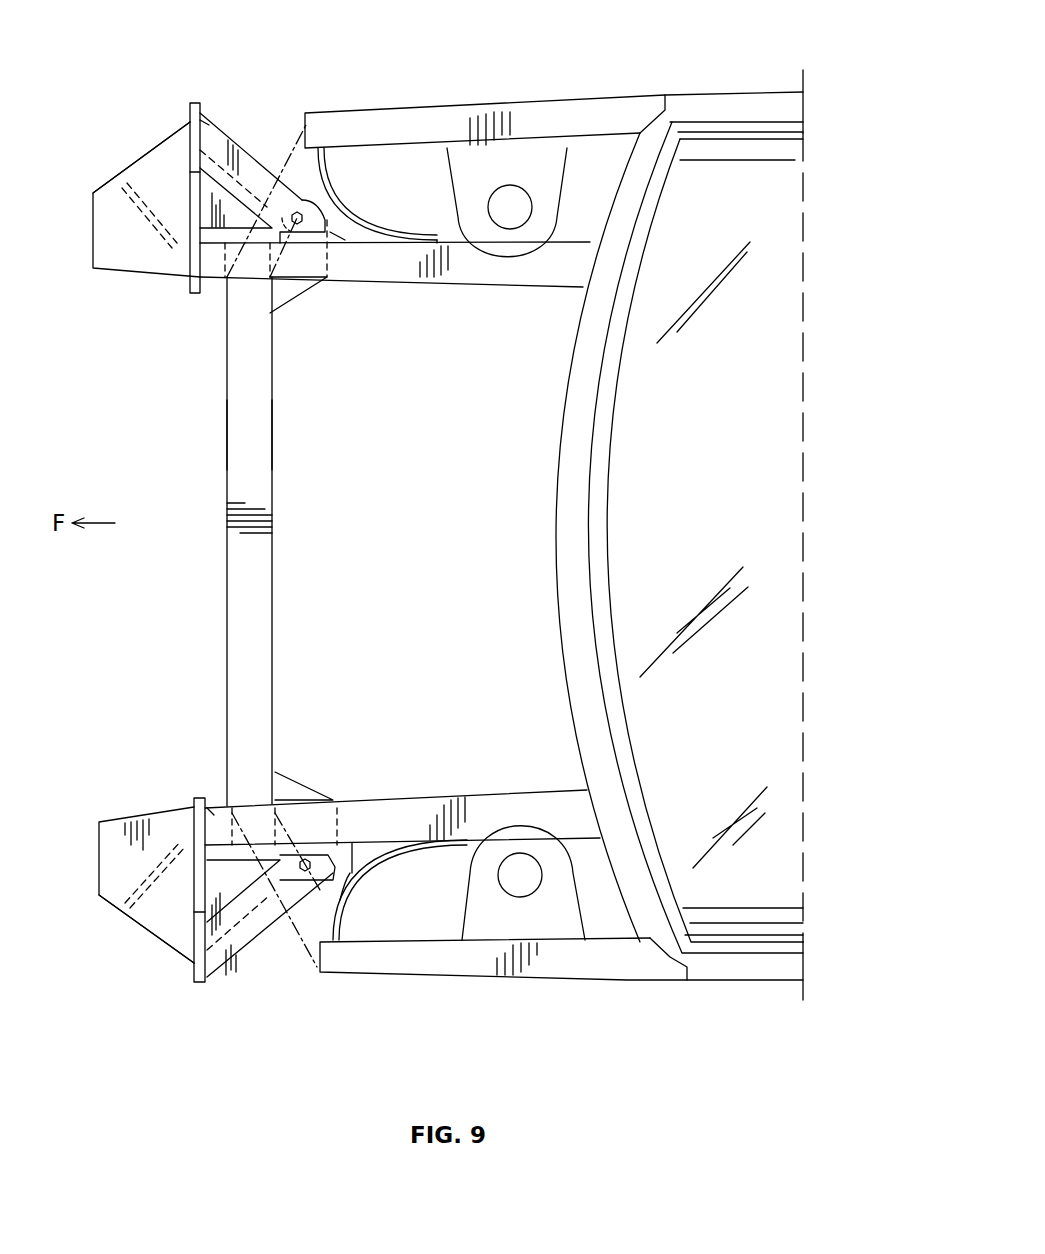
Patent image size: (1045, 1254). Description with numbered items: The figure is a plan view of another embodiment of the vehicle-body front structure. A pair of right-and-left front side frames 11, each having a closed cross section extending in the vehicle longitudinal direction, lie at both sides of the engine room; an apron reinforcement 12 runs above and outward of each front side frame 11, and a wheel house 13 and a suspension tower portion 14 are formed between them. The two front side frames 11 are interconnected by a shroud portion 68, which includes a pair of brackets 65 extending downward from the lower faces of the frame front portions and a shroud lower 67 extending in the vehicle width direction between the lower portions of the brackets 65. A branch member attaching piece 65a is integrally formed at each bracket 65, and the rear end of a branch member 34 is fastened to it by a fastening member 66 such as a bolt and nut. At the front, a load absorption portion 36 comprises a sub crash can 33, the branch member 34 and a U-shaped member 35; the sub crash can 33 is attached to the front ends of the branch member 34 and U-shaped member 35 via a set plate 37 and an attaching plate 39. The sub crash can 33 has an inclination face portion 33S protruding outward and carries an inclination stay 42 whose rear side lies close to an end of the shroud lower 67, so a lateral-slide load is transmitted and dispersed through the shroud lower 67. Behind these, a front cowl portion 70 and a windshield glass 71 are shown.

The front side frame 11 is at (497, 270).
The apron reinforcement 12 is at (413, 123).
The wheel house 13 is at (399, 188).
The suspension tower portion 14 is at (550, 143).
The sub crash can 33 is at (122, 260).
The inclination face portion 33S is at (137, 157).
The branch member 34 is at (257, 153).
The U-shaped member 35 is at (208, 187).
The load absorption portion 36 is at (164, 93).
The set plate 37 is at (200, 127).
The attaching plate 39 is at (190, 178).
The inclination stay 42 is at (135, 203).
The bracket 65 is at (287, 312).
The branch member attaching piece 65a is at (330, 232).
The fastening member 66 is at (298, 223).
The shroud lower 67 is at (253, 430).
The shroud portion 68 is at (213, 580).
The front cowl portion 70 is at (544, 508).
The windshield glass 71 is at (711, 463).